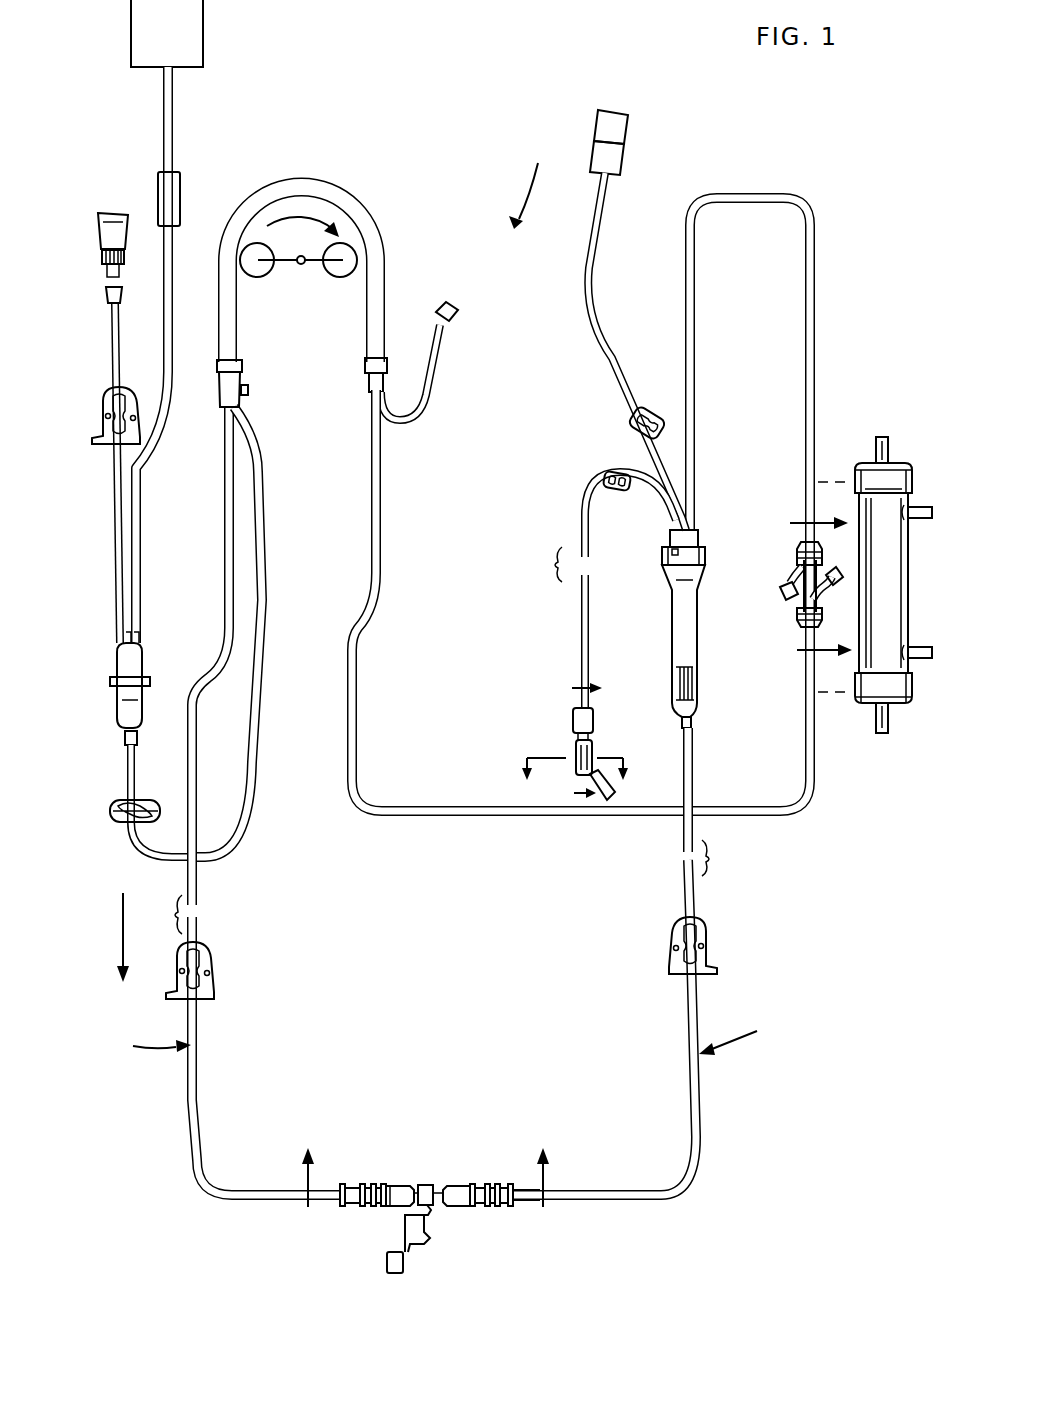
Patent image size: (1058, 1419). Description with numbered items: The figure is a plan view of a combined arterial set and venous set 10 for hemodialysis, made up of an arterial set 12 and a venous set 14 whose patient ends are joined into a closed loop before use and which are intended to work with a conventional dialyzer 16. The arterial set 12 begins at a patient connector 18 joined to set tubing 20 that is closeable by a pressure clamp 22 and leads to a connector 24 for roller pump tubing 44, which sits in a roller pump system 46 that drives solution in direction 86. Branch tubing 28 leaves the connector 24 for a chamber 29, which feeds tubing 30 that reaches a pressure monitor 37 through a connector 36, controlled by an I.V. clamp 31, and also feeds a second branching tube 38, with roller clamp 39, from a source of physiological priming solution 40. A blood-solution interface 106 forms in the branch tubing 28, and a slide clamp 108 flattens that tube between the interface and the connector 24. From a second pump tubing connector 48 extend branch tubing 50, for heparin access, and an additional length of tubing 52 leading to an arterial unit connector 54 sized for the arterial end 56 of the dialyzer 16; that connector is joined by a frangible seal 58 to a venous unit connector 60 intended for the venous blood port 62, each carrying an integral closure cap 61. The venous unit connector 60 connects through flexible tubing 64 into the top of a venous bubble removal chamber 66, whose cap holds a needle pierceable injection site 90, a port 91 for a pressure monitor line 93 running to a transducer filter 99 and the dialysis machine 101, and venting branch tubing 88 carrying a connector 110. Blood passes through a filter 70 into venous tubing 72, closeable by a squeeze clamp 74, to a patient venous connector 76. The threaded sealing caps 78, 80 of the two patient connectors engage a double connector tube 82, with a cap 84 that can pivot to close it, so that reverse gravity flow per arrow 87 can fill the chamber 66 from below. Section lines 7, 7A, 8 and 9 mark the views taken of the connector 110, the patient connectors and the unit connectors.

The combined arterial set and venous set 10 is at (532, 180).
The arterial set 12 is at (145, 1045).
The venous set 14 is at (650, 1056).
The dialyzer 16 is at (890, 586).
The patient connector 18 is at (350, 1190).
The set tubing 20 is at (200, 1138).
The pressure clamp 22 is at (216, 978).
The connector 24 is at (246, 372).
The branch tubing 28 is at (262, 548).
The chamber 29 is at (125, 655).
The tubing 30 is at (117, 540).
The I.V. clamp 31 is at (110, 408).
The connector 36 is at (107, 266).
The pressure monitor 37 is at (110, 220).
The second branching tube 38 is at (175, 148).
The roller clamp 39 is at (181, 188).
The source of physiological priming solution 40 is at (150, 46).
The roller pump tubing 44 is at (313, 190).
The roller pump system 46 is at (292, 268).
The second pump tubing connector 48 is at (382, 360).
The branch tubing 50 is at (425, 408).
The additional length of tubing 52 is at (378, 575).
The arterial unit connector 54 is at (800, 626).
The arterial end 56 is at (890, 724).
The frangible seal 58 is at (795, 616).
The venous unit connector 60 is at (800, 553).
The integral closure cap 61 is at (782, 589).
The venous blood port 62 is at (882, 446).
The flexible tubing 64 is at (816, 275).
The venous bubble removal chamber 66 is at (683, 618).
The filter 70 is at (680, 690).
The venous tubing 72 is at (687, 888).
The squeeze clamp 74 is at (720, 945).
The patient venous connector 76 is at (504, 1188).
The threaded sealing cap 78 is at (393, 1188).
The threaded sealing cap 80 is at (457, 1188).
The double connector tube 82 is at (427, 1185).
The cap 84 is at (405, 1262).
The direction of solution flow 86 is at (325, 235).
The arrow of reverse flow direction 87 is at (121, 916).
The branch tubing 88 is at (586, 515).
The needle pierceable injection site 90 is at (668, 553).
The port 91 is at (667, 533).
The pressure monitor line 93 is at (633, 378).
The transducer filter 99 is at (616, 160).
The dialysis machine 101 is at (612, 128).
The blood-solution interface 106 is at (128, 760).
The slide clamp 108 is at (123, 828).
The connector 110 is at (573, 720).
The section line 7- 7 is at (577, 741).
The section line 7A- 7A is at (576, 755).
The section line 8- 8 is at (425, 1197).
The section line 9- 9 is at (811, 587).